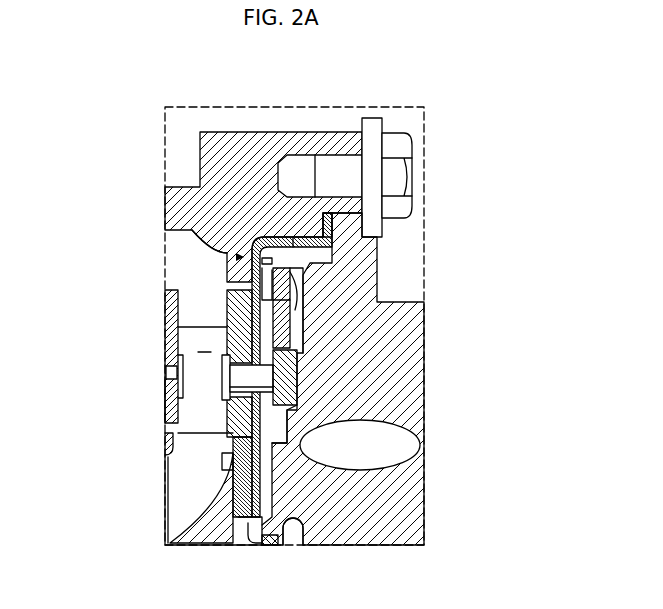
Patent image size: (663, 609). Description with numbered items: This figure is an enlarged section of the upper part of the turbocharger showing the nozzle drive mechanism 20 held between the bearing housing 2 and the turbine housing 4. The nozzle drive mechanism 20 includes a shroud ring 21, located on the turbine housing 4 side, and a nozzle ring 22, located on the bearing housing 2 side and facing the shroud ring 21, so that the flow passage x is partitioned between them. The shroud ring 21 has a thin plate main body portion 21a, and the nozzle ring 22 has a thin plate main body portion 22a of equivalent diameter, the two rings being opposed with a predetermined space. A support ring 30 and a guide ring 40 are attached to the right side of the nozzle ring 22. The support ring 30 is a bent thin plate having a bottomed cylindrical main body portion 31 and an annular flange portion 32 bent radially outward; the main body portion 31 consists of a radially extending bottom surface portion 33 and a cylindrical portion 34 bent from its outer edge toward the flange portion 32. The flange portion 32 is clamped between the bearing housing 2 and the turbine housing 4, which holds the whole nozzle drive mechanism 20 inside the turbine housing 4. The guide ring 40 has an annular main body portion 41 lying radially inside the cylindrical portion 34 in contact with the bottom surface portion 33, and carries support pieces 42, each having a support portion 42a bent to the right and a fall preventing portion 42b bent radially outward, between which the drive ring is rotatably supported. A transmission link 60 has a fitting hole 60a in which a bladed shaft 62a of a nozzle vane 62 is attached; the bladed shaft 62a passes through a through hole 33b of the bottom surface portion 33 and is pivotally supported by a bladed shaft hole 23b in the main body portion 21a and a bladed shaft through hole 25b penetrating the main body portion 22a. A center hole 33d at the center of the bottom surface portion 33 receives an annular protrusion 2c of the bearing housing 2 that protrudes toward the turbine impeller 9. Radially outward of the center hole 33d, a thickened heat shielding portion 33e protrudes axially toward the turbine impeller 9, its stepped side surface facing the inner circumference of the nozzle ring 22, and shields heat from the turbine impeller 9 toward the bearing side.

The nozzle drive mechanism 20 is at (108, 98).
The support ring 30 is at (192, 132).
The guide ring 40 is at (250, 240).
The main body portion 41 is at (297, 240).
The turbine housing 4 is at (313, 123).
The flange portion 32 is at (332, 230).
The bearing housing 2 is at (372, 247).
The main body portion 31 is at (335, 262).
The cylindrical portion 34 is at (300, 275).
The fall preventing portion 42b is at (300, 300).
The support piece 42 is at (285, 320).
The support portion 42a is at (290, 345).
The bottom surface portion 33 is at (297, 360).
The transmission link 60 is at (297, 390).
The fitting hole 60a is at (297, 405).
The through hole 33b is at (300, 410).
The nozzle ring 22 is at (240, 320).
The main body portion 22a is at (236, 257).
The shroud ring 21 is at (165, 306).
The main body portion 21a is at (165, 312).
The bladed shaft through hole 25b is at (222, 368).
The bladed shaft hole 23b is at (165, 380).
The nozzle vane 62 is at (192, 442).
The turbine impeller 9 is at (173, 525).
The bladed shaft 62a is at (195, 425).
The annular protrusion 2c is at (250, 544).
The center hole 33d is at (262, 543).
The heat shielding portion 33e is at (300, 530).